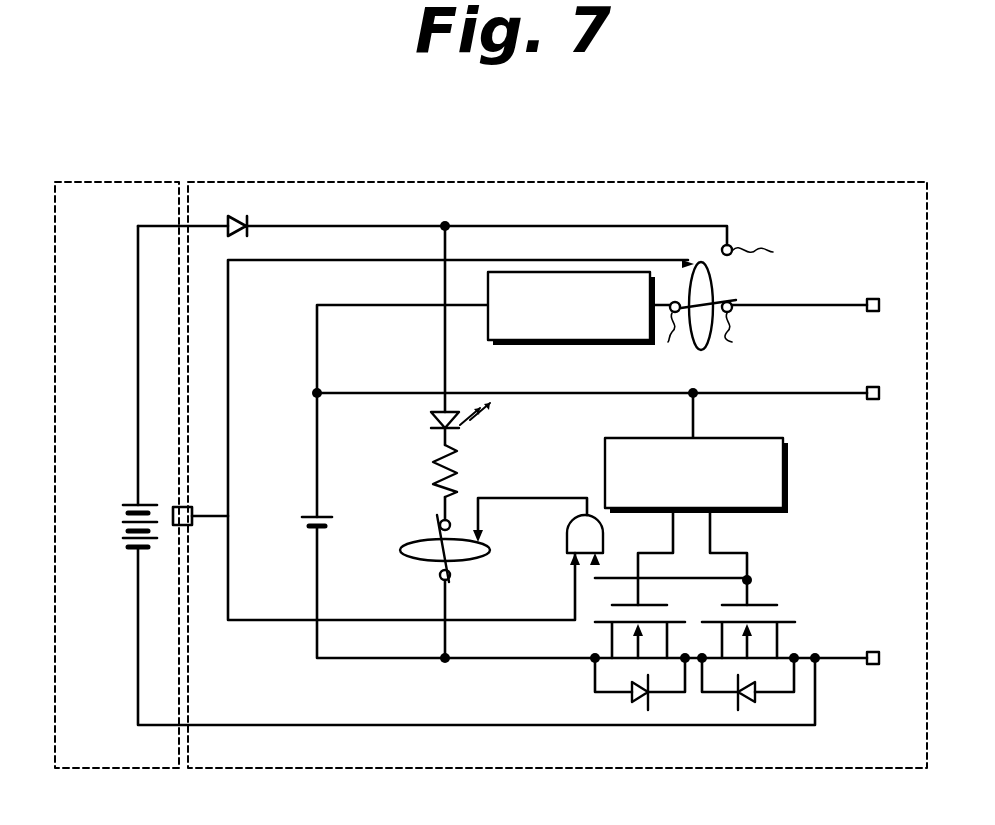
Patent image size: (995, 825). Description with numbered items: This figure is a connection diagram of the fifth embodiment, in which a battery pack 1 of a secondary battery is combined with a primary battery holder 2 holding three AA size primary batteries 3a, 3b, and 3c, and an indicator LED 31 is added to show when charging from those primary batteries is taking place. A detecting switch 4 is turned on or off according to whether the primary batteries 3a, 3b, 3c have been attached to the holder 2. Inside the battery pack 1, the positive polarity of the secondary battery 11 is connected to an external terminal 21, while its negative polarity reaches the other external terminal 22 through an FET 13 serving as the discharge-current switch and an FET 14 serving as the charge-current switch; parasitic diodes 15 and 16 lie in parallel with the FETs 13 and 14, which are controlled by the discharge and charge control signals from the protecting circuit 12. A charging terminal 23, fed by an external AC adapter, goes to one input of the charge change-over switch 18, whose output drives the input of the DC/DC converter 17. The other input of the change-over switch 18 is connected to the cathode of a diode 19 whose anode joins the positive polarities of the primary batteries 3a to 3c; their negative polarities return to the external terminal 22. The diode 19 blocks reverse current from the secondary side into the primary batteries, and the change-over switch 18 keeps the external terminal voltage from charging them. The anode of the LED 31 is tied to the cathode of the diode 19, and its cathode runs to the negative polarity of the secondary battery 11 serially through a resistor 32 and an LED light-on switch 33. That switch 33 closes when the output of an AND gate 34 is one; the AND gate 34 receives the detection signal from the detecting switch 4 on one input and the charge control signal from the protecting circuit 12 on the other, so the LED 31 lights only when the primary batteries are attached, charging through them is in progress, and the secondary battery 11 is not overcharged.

The battery pack 1 is at (125, 182).
The primary battery holder 2 is at (570, 182).
The primary battery 3a is at (128, 505).
The primary battery 3b is at (122, 524).
The primary battery 3c is at (128, 548).
The detecting switch 4 is at (190, 508).
The secondary battery 11 is at (332, 520).
The protecting circuit 12 is at (750, 438).
The FET 13 is at (667, 606).
The FET 14 is at (777, 606).
The parasitic diode 15 is at (640, 700).
The parasitic diode 16 is at (745, 700).
The DC/DC converter 17 is at (488, 322).
The charge change-over switch 18 is at (712, 340).
The diode 19 is at (240, 236).
The external terminal 21 is at (873, 400).
The external terminal 22 is at (872, 665).
The charging terminal 23 is at (874, 312).
The LED 31 is at (428, 420).
The resistor 32 is at (430, 465).
The LED light-on switch 33 is at (403, 549).
The AND gate 34 is at (590, 513).